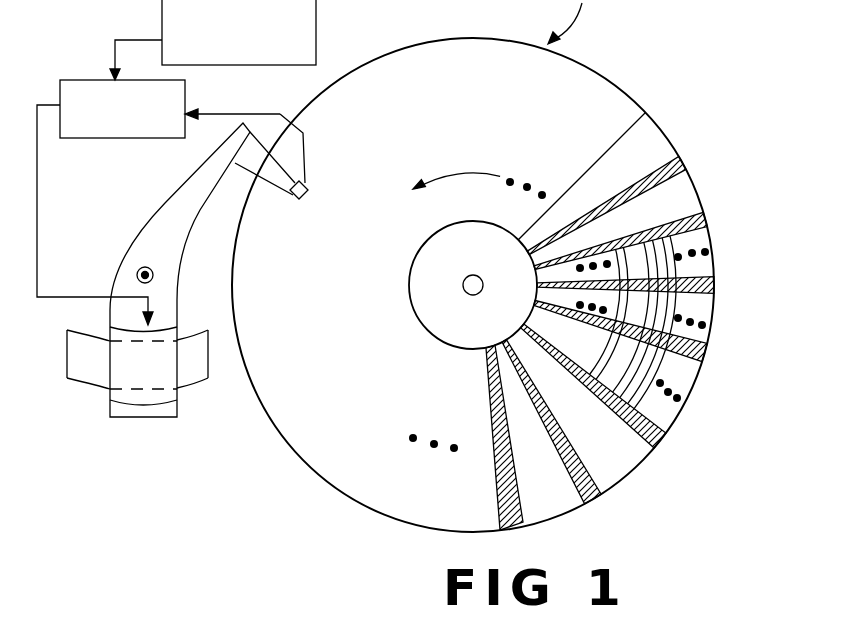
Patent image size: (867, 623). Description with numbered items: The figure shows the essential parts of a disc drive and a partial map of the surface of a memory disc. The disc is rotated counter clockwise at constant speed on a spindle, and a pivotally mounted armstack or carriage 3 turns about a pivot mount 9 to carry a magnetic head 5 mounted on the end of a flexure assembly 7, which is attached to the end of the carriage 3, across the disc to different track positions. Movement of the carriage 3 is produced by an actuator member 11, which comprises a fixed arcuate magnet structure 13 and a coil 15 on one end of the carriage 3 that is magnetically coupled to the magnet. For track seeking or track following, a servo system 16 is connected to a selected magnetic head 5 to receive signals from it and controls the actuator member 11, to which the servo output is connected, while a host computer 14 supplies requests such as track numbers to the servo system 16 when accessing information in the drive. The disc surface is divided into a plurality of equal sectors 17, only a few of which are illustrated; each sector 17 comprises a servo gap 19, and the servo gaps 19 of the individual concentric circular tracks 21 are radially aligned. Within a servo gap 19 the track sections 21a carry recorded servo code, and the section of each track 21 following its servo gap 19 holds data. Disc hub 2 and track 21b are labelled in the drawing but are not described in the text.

The disk hub / spindle 2 is at (488, 293).
The armstack or carriage 3 is at (150, 220).
The magnetic head 5 is at (305, 198).
The flexure assembly 7 is at (287, 180).
The pivot mount 9 is at (140, 268).
The actuator member 11 is at (196, 405).
The arcuate magnet structure 13 is at (198, 367).
The host computer 14 is at (160, 2).
The coil 15 is at (110, 393).
The servo system 16 is at (88, 80).
The sector 17 is at (688, 200).
The servo gap 19 is at (680, 158).
The concentric circular track 21 is at (673, 272).
The track section 21a is at (717, 280).
The track 21b is at (665, 333).